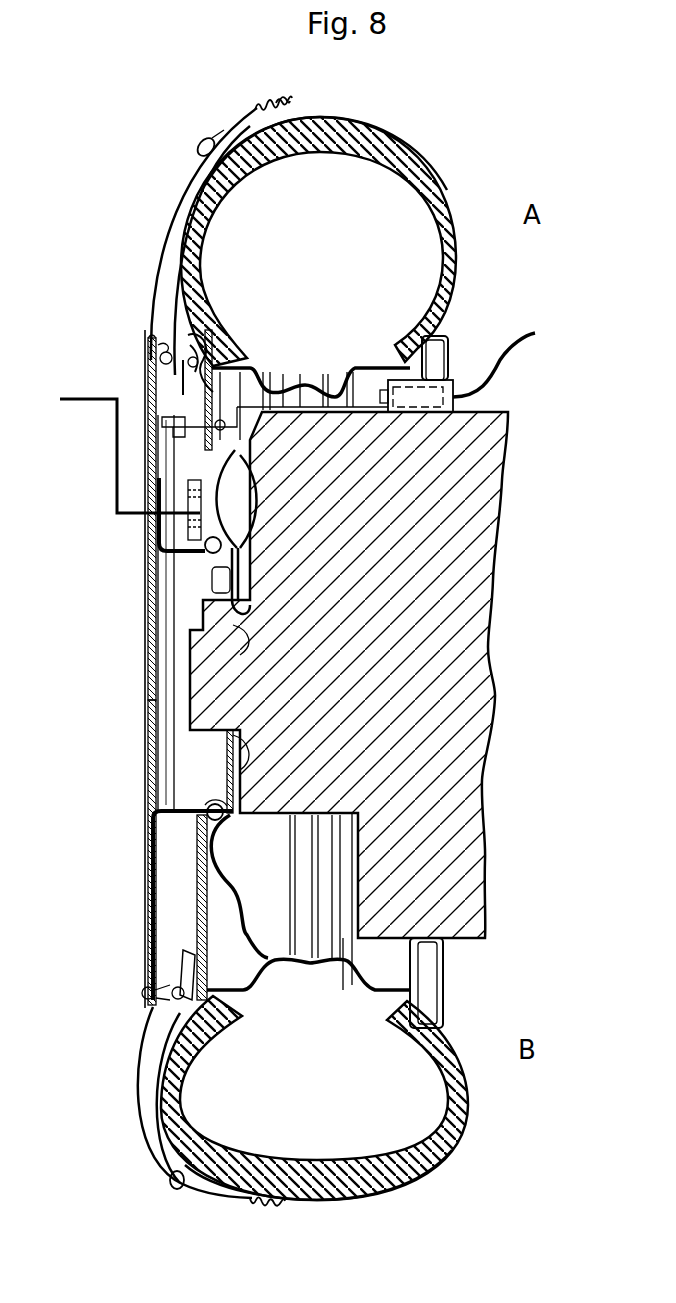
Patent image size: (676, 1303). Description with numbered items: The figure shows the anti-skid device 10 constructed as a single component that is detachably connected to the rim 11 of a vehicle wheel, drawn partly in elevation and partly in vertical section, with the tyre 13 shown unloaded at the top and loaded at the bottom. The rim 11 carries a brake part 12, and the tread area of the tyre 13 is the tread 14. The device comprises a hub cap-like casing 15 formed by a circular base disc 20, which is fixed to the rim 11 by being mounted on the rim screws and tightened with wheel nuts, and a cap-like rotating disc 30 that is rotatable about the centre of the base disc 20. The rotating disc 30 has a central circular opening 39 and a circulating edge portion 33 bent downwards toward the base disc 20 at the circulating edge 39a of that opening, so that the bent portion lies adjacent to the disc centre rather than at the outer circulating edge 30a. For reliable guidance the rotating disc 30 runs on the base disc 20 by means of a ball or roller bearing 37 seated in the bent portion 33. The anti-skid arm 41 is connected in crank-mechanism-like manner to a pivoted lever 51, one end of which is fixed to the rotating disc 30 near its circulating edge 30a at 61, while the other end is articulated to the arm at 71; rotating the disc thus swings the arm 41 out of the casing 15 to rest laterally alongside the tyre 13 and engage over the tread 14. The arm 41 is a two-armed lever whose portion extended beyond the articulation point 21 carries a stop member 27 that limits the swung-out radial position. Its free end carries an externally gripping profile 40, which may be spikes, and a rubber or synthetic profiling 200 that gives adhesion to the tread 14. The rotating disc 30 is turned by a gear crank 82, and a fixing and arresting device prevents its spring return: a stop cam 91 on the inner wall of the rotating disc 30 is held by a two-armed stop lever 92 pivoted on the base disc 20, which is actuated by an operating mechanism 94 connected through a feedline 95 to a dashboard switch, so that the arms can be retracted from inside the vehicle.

The anti-skid device 10 is at (90, 425).
The rim 11 is at (242, 757).
The brake part 12 is at (484, 652).
The tyre 13 is at (423, 170).
The tread 14 is at (343, 120).
The casing 15 is at (143, 849).
The base disc 20 is at (202, 884).
The articulation point 21 is at (184, 375).
The stop member 27 is at (189, 957).
The rotating disc 30 is at (151, 908).
The circulating edge 30a is at (153, 383).
The downwardly bent edge portion 33 is at (190, 546).
The ball or roller bearing 37 is at (208, 806).
The circular opening 39 is at (157, 612).
The circulating edge of opening 39a is at (157, 547).
The gripping profile 40 is at (273, 100).
The anti-skid arm 41 is at (170, 206).
The pivoted lever 51 is at (151, 247).
The fixing point of pivoted lever 61 is at (152, 352).
The articulation point of pivoted lever 71 is at (200, 143).
The gear crank 82 is at (112, 461).
The stop cam 91 is at (170, 438).
The two-armed stop lever 92 is at (294, 404).
The operating mechanism 94 is at (446, 390).
The feedline 95 is at (528, 332).
The profiling 200 is at (288, 104).